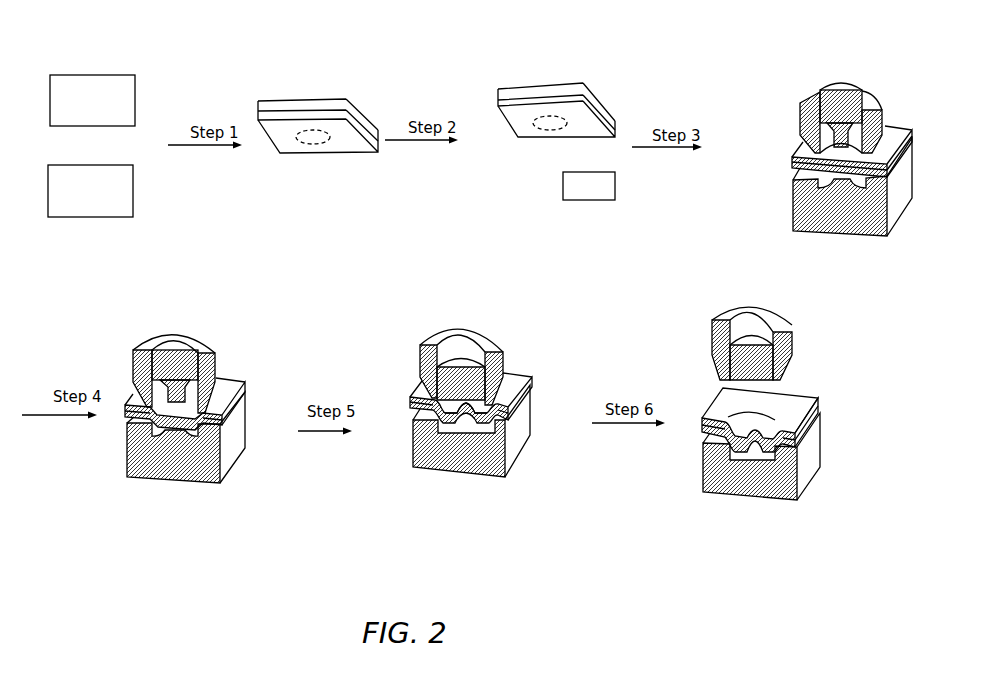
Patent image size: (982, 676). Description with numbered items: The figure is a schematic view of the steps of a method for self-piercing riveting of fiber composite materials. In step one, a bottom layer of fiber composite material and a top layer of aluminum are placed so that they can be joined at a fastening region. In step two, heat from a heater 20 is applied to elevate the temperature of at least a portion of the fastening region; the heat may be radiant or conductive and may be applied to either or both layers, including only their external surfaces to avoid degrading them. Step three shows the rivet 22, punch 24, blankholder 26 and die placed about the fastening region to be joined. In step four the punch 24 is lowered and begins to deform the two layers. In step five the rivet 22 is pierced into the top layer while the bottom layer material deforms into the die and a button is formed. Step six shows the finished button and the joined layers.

The heater 20 is at (580, 195).
The rivet 22 is at (858, 125).
The punch 24 is at (818, 100).
The blankholder 26 is at (879, 96).